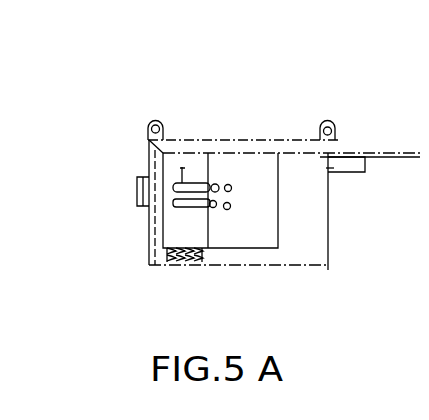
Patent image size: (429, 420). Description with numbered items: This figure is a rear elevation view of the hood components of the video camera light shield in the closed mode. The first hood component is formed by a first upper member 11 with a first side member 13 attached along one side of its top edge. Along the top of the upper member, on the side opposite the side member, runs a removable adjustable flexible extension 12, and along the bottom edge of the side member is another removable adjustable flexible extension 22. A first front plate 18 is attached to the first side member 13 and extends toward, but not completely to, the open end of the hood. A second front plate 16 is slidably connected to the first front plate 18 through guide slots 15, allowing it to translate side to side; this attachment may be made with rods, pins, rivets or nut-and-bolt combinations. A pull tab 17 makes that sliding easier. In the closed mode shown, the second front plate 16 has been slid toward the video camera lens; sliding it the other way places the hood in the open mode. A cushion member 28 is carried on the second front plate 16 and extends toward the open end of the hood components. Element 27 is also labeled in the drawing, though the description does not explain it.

The first upper member 11 is at (348, 154).
The removable adjustable flexible extension 12 is at (374, 154).
The first side member 13 is at (428, 318).
The guide slots 15 is at (182, 170).
The second front plate 16 is at (253, 232).
The pull tab 17 is at (136, 195).
The first front plate 18 is at (192, 237).
The removable adjustable flexible extension 22 is at (427, 417).
The mounting bracket 27 is at (347, 176).
The cushion member 28 is at (310, 233).